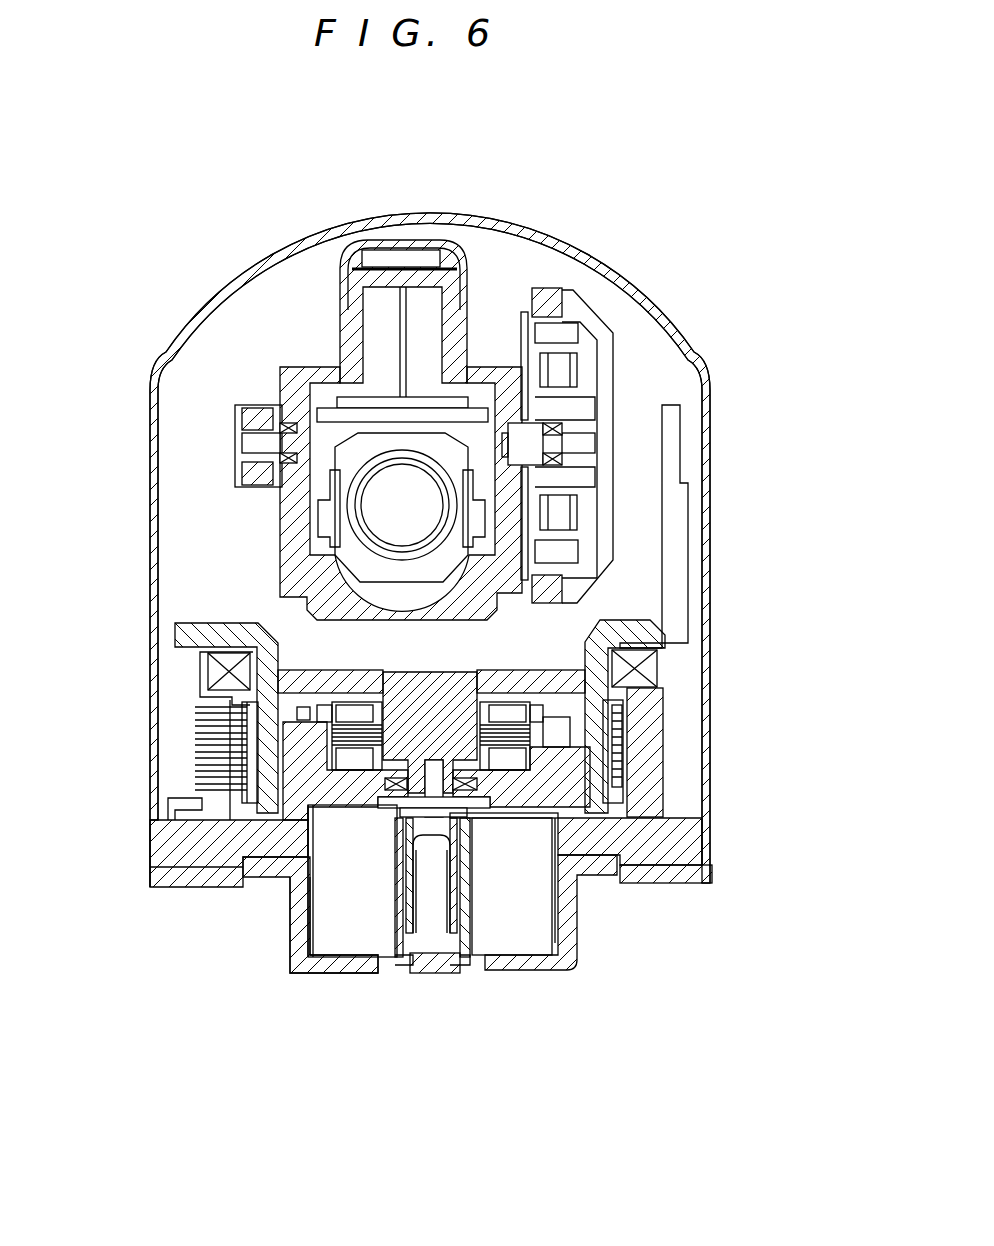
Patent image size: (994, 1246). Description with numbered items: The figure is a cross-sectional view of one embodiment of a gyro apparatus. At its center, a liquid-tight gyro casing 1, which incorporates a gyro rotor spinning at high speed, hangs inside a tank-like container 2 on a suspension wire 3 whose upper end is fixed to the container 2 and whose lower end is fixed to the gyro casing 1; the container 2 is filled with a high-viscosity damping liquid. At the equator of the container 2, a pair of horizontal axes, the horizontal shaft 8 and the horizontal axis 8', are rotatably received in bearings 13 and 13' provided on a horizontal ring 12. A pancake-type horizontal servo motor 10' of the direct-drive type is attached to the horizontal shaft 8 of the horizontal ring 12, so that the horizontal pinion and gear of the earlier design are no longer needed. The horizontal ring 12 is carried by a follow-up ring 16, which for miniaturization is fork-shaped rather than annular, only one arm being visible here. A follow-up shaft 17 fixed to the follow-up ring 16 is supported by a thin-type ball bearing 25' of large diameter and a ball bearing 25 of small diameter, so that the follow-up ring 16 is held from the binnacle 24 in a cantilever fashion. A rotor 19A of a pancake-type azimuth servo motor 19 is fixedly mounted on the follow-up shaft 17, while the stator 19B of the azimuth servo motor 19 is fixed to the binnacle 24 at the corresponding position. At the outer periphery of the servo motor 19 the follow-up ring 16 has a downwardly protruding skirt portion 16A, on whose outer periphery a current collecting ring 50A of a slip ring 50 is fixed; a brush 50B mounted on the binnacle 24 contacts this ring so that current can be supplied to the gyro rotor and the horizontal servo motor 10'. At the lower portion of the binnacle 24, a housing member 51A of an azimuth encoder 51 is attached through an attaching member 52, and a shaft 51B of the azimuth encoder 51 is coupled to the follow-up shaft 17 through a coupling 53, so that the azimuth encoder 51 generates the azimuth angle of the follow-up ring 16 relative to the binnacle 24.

The gyro casing 1 is at (358, 445).
The container 2 is at (288, 385).
The suspension wire 3 is at (405, 315).
The horizontal ring 12 is at (253, 413).
The horizontal axis 8' is at (191, 421).
The bearing 13' is at (195, 469).
The pancake-type horizontal servo motor 10' is at (645, 445).
The horizontal shaft 8 is at (631, 428).
The bearing 13 is at (657, 451).
The follow-up ring 16 is at (677, 530).
The thin-type ball bearing 25' is at (682, 697).
The skirt portion 16A is at (598, 750).
The binnacle 24 is at (702, 876).
The follow-up shaft 17 is at (460, 737).
The ball bearing 25 is at (522, 880).
The coupling 53 is at (463, 917).
The attaching member 52 is at (530, 978).
The azimuth encoder 51 is at (450, 1023).
The housing member 51A is at (355, 940).
The shaft 51B is at (395, 945).
The slip ring 50 is at (210, 935).
The current collecting ring 50A is at (250, 800).
The brush 50B is at (203, 773).
The pancake-type azimuth servo motor 19 is at (270, 1045).
The rotor 19A is at (300, 970).
The stator 19B is at (340, 800).